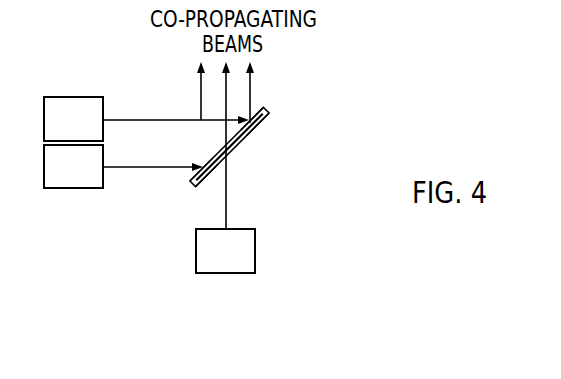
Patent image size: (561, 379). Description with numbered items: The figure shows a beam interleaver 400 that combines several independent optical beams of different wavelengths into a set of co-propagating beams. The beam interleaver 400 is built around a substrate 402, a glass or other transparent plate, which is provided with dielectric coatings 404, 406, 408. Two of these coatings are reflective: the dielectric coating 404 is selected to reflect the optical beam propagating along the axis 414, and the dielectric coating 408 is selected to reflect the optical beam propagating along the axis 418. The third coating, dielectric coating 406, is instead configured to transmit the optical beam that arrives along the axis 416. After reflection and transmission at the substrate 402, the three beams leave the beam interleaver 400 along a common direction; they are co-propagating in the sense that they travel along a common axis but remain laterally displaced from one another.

The beam interleaver 400 is at (352, 89).
The substrate 402 is at (271, 108).
The dielectric coating 404 is at (191, 174).
The dielectric coating 406 is at (244, 135).
The dielectric coating 408 is at (265, 106).
The axis 414 is at (138, 168).
The axis 416 is at (227, 202).
The axis 418 is at (132, 120).